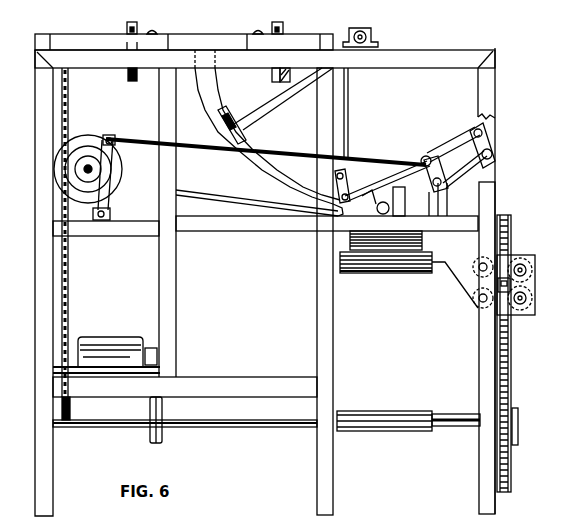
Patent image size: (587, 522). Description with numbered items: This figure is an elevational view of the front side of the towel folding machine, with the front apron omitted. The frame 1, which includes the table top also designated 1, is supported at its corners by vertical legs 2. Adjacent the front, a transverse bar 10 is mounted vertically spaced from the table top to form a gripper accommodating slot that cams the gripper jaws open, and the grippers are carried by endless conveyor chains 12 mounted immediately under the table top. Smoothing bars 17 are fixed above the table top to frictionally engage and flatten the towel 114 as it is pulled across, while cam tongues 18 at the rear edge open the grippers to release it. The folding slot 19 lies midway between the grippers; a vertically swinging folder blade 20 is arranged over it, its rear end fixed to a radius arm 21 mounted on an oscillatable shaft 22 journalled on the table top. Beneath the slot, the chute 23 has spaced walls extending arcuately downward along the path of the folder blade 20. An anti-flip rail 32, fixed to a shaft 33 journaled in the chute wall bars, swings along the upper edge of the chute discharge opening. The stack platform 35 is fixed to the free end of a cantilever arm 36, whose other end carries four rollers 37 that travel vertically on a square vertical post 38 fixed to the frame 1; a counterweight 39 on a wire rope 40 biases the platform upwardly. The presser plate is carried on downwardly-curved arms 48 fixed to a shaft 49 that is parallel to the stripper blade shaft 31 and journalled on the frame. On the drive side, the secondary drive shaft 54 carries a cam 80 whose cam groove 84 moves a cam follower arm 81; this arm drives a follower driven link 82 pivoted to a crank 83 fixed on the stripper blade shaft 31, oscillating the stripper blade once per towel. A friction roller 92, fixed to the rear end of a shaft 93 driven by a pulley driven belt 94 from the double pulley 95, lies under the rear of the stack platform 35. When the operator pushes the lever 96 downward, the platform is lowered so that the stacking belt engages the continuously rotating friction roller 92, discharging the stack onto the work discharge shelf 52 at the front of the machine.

The frame 1 is at (437, 47).
The vertical legs 2 is at (43, 343).
The transverse bar 10 is at (313, 34).
The endless conveyor chains 12 is at (134, 81).
The smoothing bars 17 is at (157, 33).
The cam tongues 18 is at (127, 25).
The folding slot 19 is at (205, 56).
The folder blade 20 is at (240, 128).
The radius arm 21 is at (288, 82).
The oscillatable shaft 22 is at (372, 27).
The chute 23 is at (212, 90).
The stripper blade shaft 31 is at (448, 189).
The anti-flip rail 32 is at (358, 180).
The shaft 33 is at (339, 170).
The stack platform 35 is at (400, 276).
The cantilever arm 36 is at (466, 280).
The rollers 37 is at (530, 308).
The vertical post 38 is at (514, 372).
The counterweight 39 is at (518, 418).
The wire rope 40 is at (515, 243).
The downwardly-curved arms 48 is at (406, 184).
The shaft 49 is at (494, 158).
The work discharge shelf 52 is at (412, 410).
The secondary drive shaft 54 is at (94, 135).
The cam 80 is at (121, 172).
The cam follower arm 81 is at (108, 186).
The follower driven link 82 is at (203, 148).
The crank 83 is at (434, 153).
The cam groove 84 is at (80, 134).
The friction roller 92 is at (408, 430).
The shaft 93 is at (230, 430).
The pulley driven belt 94 is at (162, 409).
The double pulley 95 is at (158, 358).
The lever 96 is at (520, 286).
The towel 114 is at (424, 236).